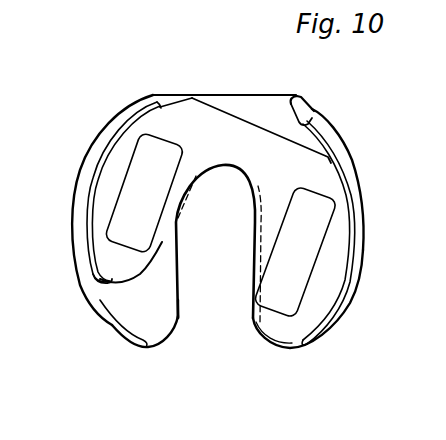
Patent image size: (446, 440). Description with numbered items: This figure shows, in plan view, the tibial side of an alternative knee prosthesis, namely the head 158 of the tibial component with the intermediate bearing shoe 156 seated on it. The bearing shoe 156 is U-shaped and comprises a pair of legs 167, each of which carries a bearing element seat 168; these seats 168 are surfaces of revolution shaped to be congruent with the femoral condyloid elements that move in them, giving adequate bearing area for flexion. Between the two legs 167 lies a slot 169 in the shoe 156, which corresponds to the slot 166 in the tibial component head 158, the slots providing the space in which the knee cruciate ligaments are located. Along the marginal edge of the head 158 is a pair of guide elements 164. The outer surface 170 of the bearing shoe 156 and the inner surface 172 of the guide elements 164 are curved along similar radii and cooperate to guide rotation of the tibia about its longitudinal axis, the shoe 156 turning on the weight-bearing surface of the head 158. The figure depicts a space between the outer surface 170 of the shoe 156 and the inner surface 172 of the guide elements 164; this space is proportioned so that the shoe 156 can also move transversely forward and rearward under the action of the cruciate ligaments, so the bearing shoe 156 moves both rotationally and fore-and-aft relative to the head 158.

The bearing shoe 156 is at (240, 137).
The head 158 is at (219, 93).
The guide elements 164 is at (108, 122).
The slot 166 is at (184, 325).
The legs 167 is at (110, 280).
The bearing element seats 168 is at (135, 203).
The slot 169 is at (153, 258).
The outer surface 170 is at (161, 106).
The inner surface 172 is at (296, 126).